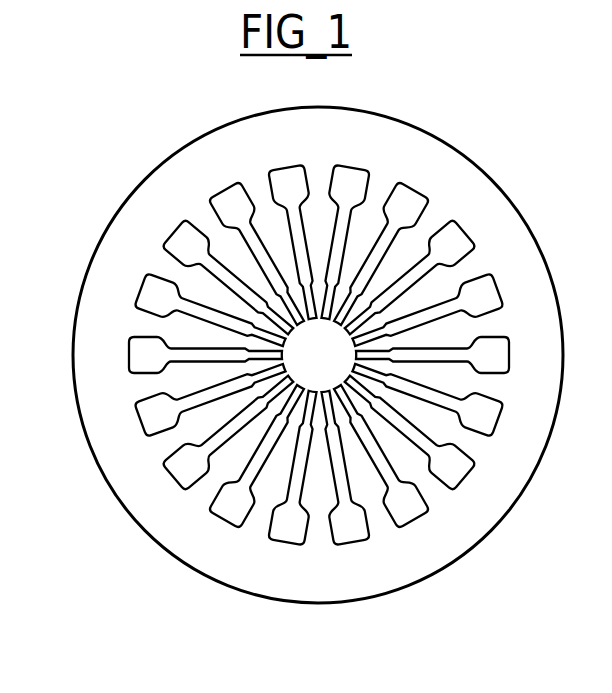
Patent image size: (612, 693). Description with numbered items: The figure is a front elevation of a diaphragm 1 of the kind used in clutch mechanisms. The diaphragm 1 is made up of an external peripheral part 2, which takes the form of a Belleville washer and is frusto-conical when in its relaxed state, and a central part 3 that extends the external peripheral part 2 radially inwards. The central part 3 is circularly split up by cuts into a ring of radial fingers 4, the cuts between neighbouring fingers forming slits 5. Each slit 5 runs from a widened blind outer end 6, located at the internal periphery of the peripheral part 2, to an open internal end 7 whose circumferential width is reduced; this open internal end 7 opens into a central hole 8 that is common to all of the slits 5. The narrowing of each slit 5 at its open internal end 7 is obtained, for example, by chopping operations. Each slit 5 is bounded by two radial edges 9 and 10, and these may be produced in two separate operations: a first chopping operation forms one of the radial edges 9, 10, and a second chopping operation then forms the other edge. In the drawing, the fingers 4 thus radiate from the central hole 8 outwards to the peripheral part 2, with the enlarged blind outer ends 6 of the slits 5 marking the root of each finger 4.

The diaphragm 1 is at (157, 140).
The external peripheral part 2 is at (141, 201).
The central part 3 is at (177, 275).
The radial fingers 4 is at (180, 333).
The slits 5 is at (180, 355).
The widened blind outer end 6 is at (142, 417).
The open internal end 7 is at (171, 449).
The central hole 8 is at (298, 372).
The radial edge 9 is at (306, 391).
The radial edge 10 is at (338, 396).